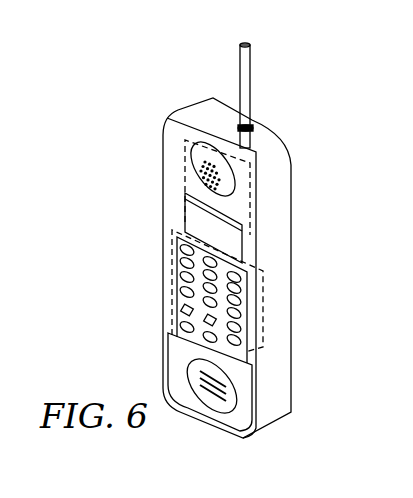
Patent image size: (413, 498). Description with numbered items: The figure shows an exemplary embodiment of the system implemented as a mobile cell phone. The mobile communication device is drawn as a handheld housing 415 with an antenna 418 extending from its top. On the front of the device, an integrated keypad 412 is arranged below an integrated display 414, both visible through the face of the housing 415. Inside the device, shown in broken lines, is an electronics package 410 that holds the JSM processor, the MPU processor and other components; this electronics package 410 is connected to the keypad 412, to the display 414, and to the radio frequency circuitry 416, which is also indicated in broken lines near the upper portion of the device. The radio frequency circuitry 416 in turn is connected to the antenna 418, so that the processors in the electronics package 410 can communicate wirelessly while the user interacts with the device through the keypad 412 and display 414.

The electronics package 410 is at (263, 310).
The keypad 412 is at (186, 291).
The display 414 is at (186, 222).
The housing 415 is at (287, 366).
The radio frequency circuitry 416 is at (186, 182).
The antenna 418 is at (250, 83).